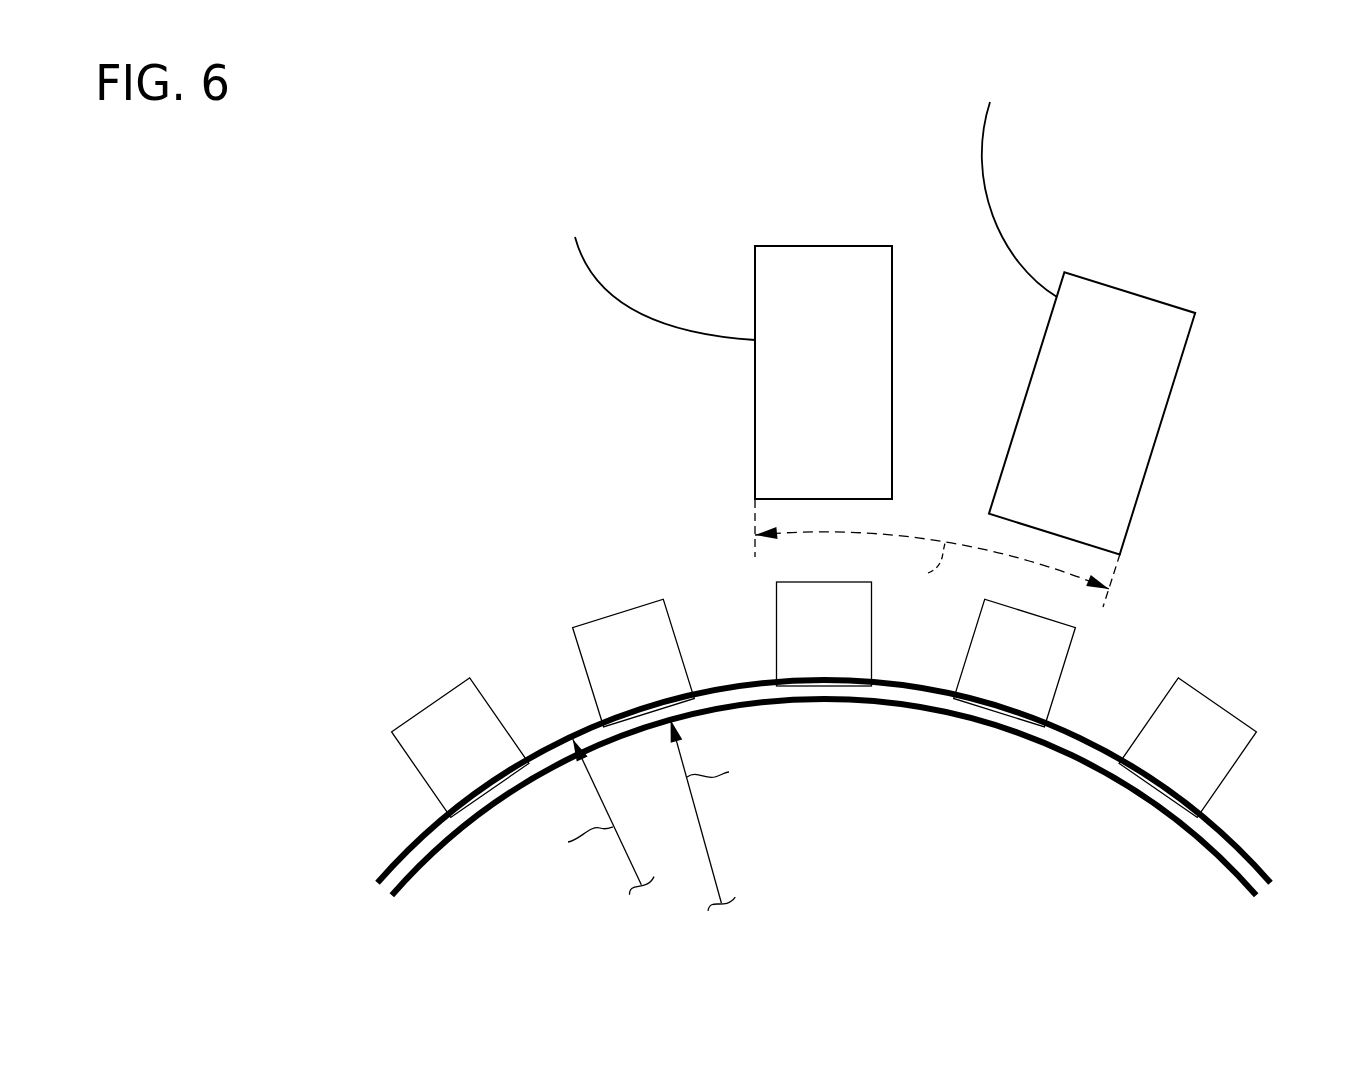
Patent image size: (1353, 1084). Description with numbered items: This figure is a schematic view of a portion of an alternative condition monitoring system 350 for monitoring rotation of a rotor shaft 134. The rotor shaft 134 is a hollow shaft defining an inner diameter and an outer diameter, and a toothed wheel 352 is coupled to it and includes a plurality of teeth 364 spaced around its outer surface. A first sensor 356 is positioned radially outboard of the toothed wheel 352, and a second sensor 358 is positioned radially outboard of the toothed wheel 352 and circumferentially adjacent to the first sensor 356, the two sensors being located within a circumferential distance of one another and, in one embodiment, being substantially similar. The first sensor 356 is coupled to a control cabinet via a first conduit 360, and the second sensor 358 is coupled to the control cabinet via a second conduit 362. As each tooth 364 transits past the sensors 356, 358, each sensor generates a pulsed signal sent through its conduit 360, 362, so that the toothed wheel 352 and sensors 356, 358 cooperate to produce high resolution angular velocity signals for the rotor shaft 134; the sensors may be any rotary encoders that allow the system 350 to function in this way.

The condition monitoring system 350 is at (340, 268).
The toothed wheel 352 is at (343, 682).
The first sensor 356 is at (893, 315).
The second sensor 358 is at (1179, 368).
The first conduit 360 is at (627, 308).
The second conduit 362 is at (975, 152).
The teeth 364 is at (617, 610).
The rotor shaft 134 is at (848, 845).